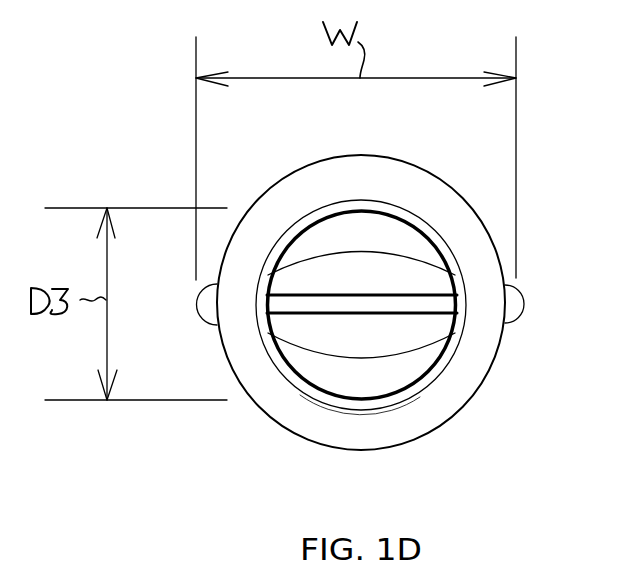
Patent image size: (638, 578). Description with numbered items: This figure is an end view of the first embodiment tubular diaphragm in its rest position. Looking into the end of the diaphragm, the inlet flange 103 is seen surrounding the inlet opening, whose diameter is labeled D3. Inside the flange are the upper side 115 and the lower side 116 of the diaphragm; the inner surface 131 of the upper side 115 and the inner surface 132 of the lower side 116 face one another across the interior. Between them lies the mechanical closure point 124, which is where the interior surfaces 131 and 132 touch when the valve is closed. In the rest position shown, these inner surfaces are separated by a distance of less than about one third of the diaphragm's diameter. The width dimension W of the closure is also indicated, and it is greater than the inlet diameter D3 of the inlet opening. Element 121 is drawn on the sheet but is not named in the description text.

The inlet flange 103 is at (270, 213).
The upper side 115 is at (357, 228).
The lower side 116 is at (408, 372).
The upper leaflet 121 is at (307, 372).
The mechanical closure point 124 is at (437, 304).
The inner surface of the upper side 131 is at (427, 230).
The inner surface of the lower side 132 is at (345, 386).